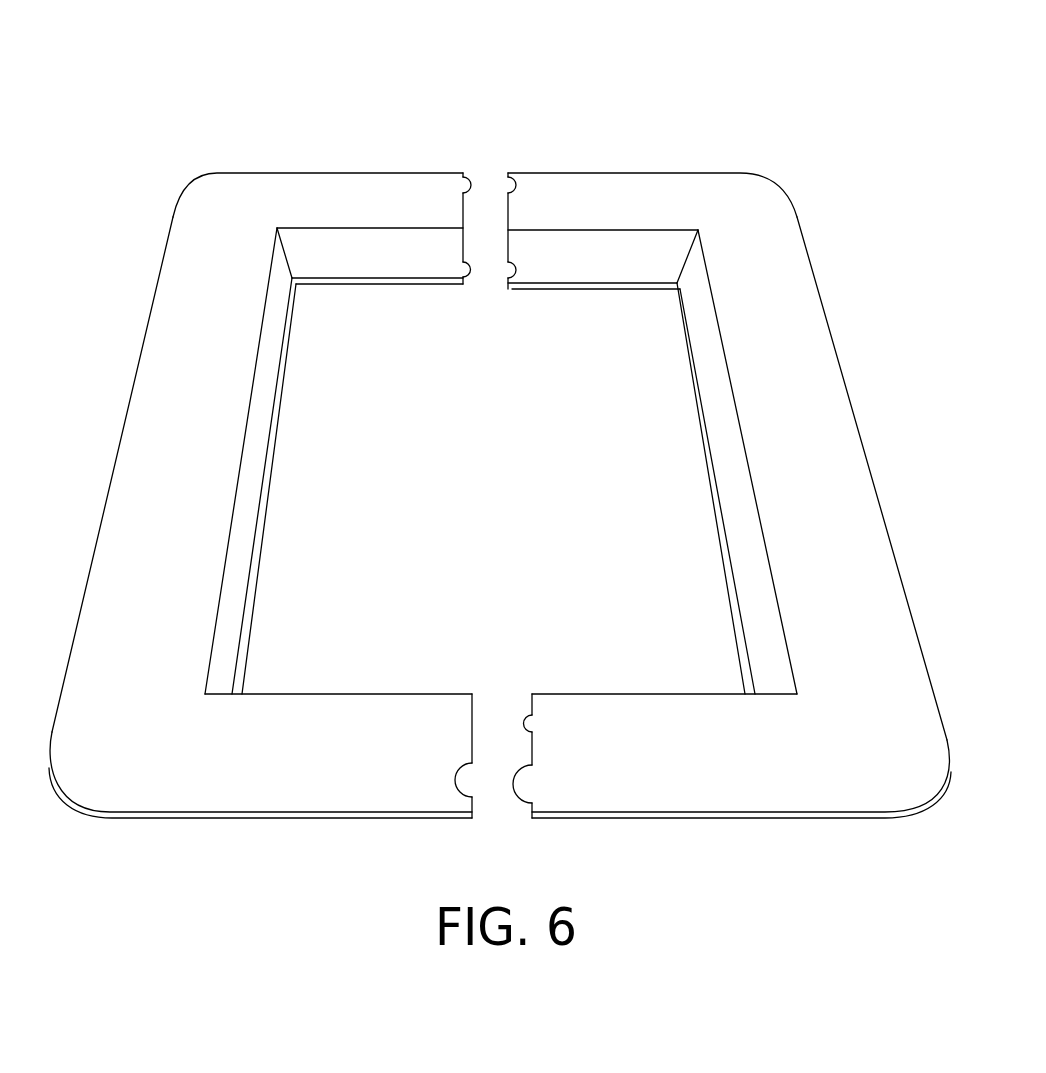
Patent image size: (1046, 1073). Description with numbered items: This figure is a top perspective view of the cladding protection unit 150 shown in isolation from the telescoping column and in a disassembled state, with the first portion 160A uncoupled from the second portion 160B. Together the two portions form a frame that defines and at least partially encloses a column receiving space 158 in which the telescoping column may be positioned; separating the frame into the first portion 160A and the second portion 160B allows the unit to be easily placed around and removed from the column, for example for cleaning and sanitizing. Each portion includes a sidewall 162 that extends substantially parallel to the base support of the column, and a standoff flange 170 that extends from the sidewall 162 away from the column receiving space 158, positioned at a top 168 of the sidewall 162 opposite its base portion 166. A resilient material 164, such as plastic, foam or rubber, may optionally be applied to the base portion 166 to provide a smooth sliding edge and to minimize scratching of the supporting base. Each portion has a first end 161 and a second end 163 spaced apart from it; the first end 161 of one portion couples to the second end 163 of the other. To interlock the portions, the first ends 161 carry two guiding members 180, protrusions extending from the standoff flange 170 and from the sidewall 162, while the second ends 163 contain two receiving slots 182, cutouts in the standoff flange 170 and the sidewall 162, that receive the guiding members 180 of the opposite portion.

The cladding protection unit 150 is at (364, 112).
The column receiving space 158 is at (625, 312).
The first portion 160A is at (120, 303).
The second portion 160B is at (865, 319).
The first end 161 is at (512, 240).
The sidewall 162 is at (265, 403).
The second end 163 is at (460, 240).
The resilient material 164 is at (255, 564).
The base portion 166 is at (272, 460).
The top 168 is at (313, 226).
The standoff flange 170 is at (128, 415).
The guiding member 180 is at (470, 177).
The receiving slot 182 is at (512, 180).